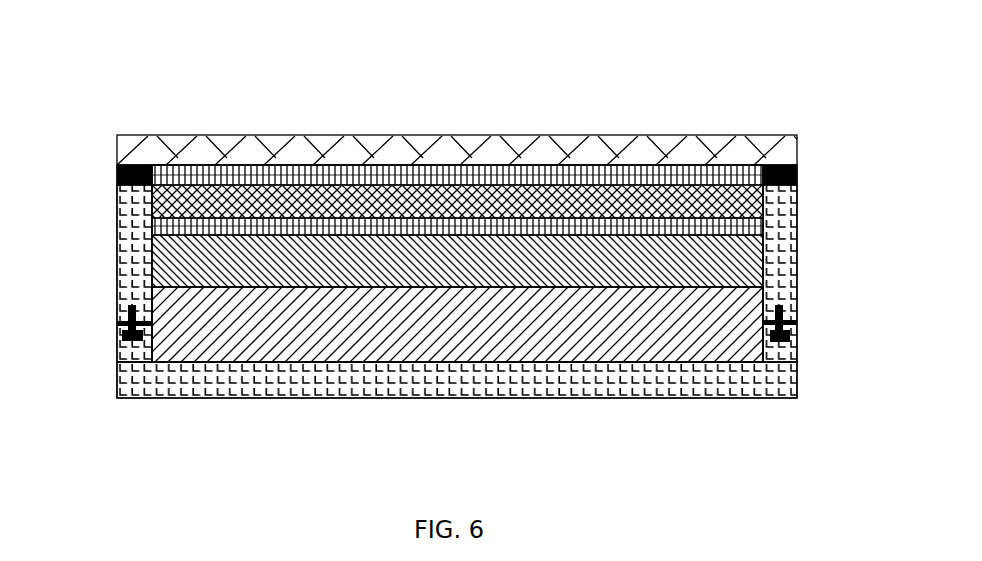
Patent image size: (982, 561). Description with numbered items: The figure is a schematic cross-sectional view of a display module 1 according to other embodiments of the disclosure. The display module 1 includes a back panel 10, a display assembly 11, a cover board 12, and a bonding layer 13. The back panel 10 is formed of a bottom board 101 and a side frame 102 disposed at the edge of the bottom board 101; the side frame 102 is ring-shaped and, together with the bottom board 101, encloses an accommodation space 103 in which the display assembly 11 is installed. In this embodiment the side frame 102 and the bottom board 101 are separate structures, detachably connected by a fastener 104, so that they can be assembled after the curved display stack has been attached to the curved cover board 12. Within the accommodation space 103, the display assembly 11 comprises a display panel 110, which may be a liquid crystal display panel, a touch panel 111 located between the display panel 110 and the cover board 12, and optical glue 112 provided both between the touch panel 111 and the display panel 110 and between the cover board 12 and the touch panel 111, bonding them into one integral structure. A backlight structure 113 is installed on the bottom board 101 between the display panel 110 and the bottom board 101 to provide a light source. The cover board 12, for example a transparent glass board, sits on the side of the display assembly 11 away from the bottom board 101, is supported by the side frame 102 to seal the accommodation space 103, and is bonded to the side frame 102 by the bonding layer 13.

The display module 1 is at (84, 72).
The back panel 10 is at (97, 333).
The display assembly 11 is at (560, 87).
The cover board 12 is at (783, 153).
The bonding layer 13 is at (117, 171).
The bottom board 101 is at (365, 380).
The side frame 102 is at (120, 246).
The accommodation space 103 is at (567, 353).
The fastener 104 is at (790, 373).
The display panel 110 is at (480, 265).
The touch panel 111 is at (302, 196).
The optical glue 112 is at (234, 172).
The backlight structure 113 is at (582, 320).